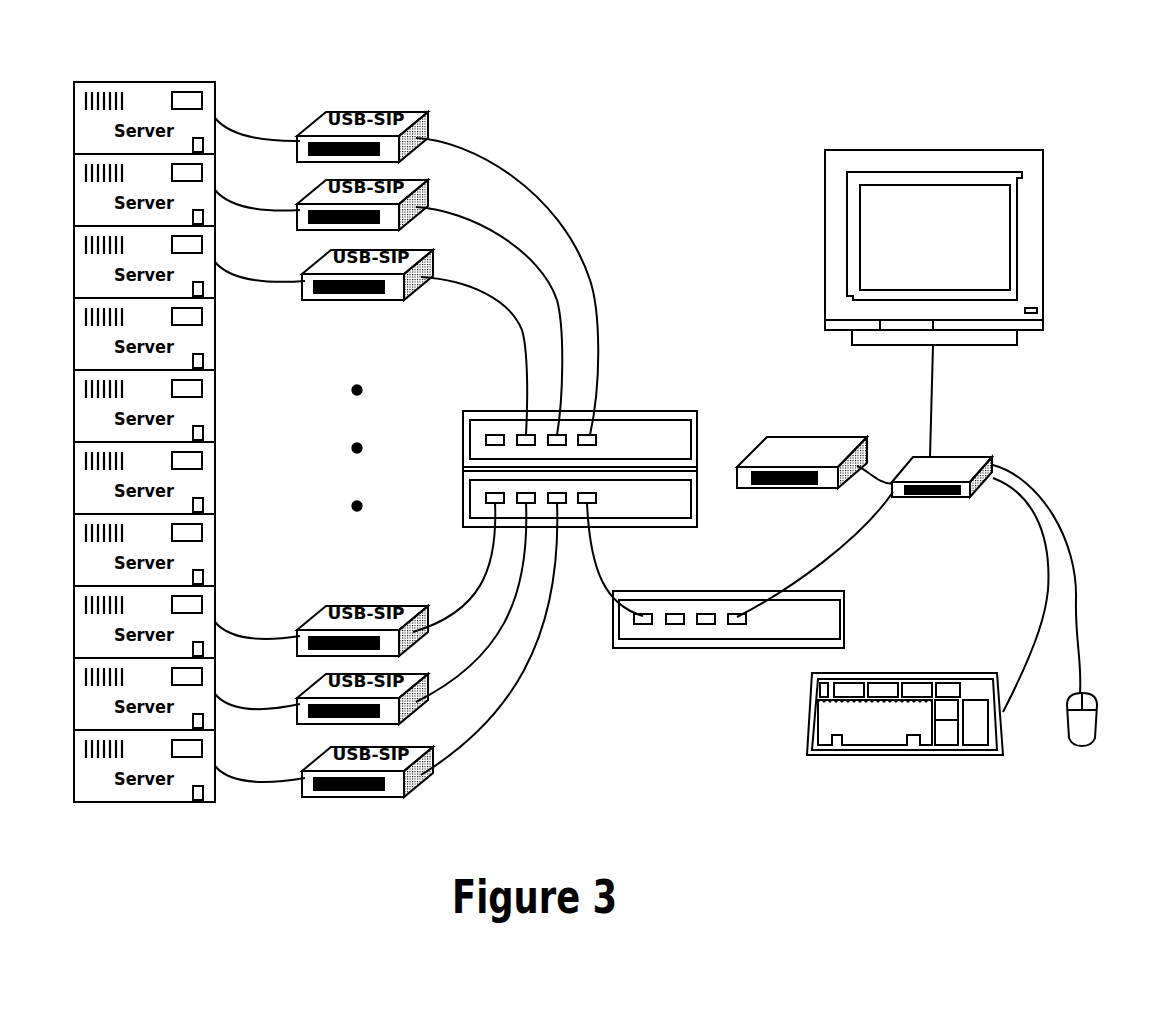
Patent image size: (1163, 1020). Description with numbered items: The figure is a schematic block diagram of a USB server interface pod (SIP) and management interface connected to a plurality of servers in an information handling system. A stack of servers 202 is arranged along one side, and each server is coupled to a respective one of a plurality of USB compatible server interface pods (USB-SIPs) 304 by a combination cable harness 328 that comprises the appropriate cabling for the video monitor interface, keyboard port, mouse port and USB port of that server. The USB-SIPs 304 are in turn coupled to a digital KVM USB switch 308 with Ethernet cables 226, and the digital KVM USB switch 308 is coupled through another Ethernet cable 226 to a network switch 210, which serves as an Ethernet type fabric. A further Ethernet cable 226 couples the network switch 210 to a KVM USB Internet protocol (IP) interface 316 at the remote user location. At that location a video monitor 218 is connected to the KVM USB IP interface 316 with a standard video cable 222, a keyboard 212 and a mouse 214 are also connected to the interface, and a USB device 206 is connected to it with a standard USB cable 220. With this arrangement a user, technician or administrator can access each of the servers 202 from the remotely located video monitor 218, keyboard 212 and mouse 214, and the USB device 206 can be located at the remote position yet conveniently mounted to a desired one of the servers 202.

The servers 202 is at (205, 83).
The combination cable harness 328 is at (242, 136).
The USB compatible server interface pods (USB-SIPs) 304 is at (420, 110).
The Ethernet cable 226 is at (515, 178).
The digital KVM USB switch 308 is at (697, 430).
The network switch 210 is at (845, 618).
The USB device 206 is at (788, 435).
The USB cable 220 is at (876, 470).
The video cable 222 is at (928, 402).
The video monitor 218 is at (935, 149).
The KVM USB Internet protocol (IP) interface 316 is at (982, 458).
The keyboard 212 is at (808, 715).
The mouse 214 is at (1094, 695).